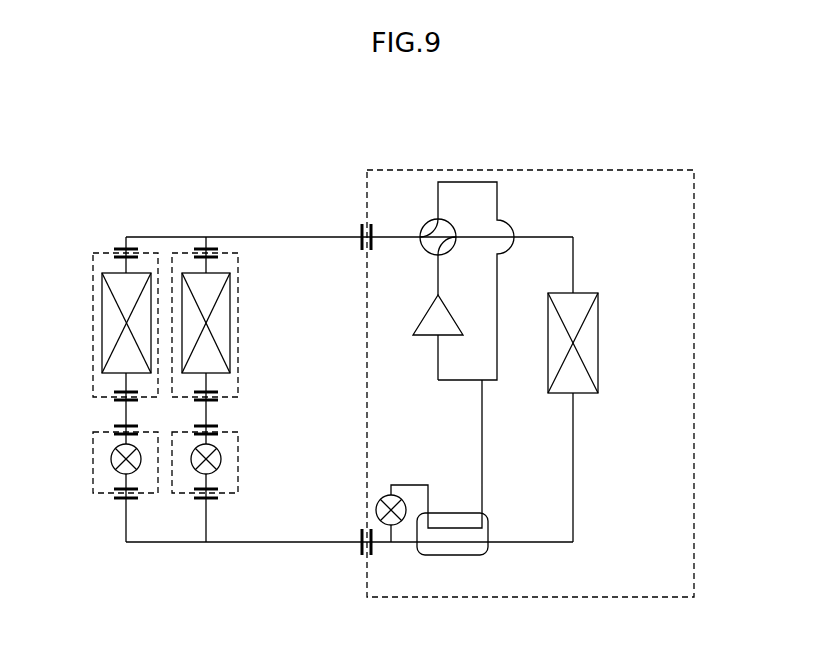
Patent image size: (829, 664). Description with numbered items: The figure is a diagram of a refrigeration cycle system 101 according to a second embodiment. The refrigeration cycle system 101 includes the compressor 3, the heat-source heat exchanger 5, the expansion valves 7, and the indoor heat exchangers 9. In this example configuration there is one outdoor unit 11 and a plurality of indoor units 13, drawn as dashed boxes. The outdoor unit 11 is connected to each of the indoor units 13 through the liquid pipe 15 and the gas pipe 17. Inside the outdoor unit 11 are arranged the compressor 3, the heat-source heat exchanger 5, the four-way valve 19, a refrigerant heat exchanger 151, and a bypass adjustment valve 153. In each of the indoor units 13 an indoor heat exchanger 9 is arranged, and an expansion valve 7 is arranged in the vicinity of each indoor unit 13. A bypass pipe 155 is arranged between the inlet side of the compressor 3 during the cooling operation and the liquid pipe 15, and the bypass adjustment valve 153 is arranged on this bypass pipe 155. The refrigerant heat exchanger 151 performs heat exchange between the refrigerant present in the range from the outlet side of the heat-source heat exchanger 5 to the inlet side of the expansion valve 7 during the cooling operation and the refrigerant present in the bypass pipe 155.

The refrigeration cycle system 101 is at (56, 152).
The indoor unit 13 is at (93, 316).
The indoor heat exchanger 9 is at (101, 293).
The expansion valve 7 is at (111, 459).
The gas pipe 17 is at (312, 237).
The liquid pipe 15 is at (295, 542).
The outdoor unit 11 is at (694, 206).
The four-way valve 19 is at (452, 224).
The compressor 3 is at (426, 316).
The heat-source heat exchanger 5 is at (598, 343).
The bypass pipe 155 is at (482, 475).
The bypass adjustment valve 153 is at (398, 523).
The refrigerant heat exchanger 151 is at (462, 555).